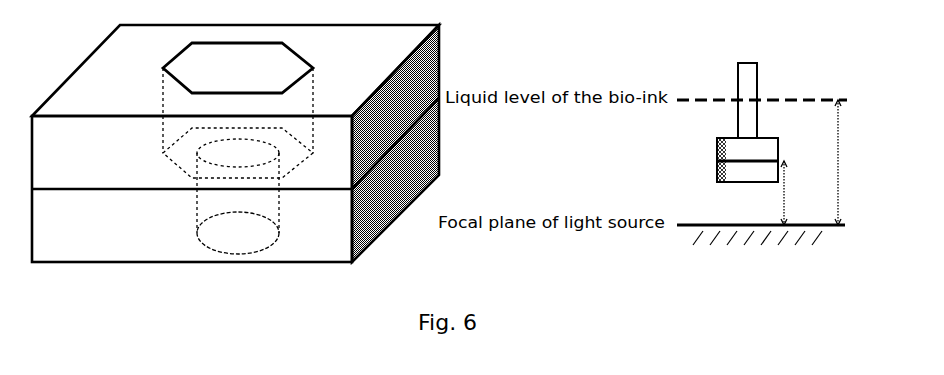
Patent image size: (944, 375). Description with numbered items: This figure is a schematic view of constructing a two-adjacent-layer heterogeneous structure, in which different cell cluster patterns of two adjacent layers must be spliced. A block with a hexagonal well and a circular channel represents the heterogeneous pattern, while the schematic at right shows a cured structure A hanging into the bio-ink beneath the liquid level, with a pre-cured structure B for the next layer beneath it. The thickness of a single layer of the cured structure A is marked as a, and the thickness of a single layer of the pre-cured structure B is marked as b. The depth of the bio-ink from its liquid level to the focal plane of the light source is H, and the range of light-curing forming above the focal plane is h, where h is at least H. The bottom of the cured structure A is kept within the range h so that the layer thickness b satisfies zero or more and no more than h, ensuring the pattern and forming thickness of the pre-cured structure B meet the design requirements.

The cured structure A is at (233, 102).
The pre-cured structure B is at (226, 203).
The thickness of a single layer of the cured structure a is at (736, 148).
The thickness of a single layer of the pre-cured structure b is at (736, 171).
The depth of the bio-ink H is at (848, 162).
The range of light-curing forming h is at (798, 193).